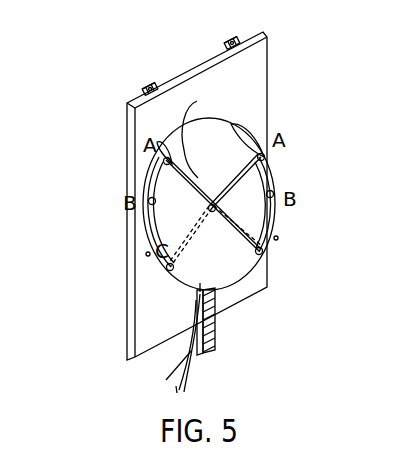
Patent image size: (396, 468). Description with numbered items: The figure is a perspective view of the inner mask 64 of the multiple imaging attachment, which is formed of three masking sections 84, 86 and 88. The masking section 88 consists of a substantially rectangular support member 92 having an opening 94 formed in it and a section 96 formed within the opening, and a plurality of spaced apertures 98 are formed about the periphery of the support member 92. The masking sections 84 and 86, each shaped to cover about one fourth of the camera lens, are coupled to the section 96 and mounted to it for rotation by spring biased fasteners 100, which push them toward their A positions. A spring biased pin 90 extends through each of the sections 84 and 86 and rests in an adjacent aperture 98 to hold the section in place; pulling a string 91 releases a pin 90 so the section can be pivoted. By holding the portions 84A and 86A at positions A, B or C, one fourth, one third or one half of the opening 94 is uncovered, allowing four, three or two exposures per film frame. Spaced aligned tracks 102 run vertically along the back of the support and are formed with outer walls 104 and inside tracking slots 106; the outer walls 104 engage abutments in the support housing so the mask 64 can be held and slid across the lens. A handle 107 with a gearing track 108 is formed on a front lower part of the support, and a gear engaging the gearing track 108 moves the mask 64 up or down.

The mask 64 is at (193, 196).
The masking section 84 is at (148, 228).
The portion of masking section 84 84A is at (186, 124).
The masking section 86 is at (267, 246).
The portion of masking section 86 86A is at (233, 183).
The masking section 88 is at (187, 196).
The spring biased pin 90 is at (188, 128).
The string 91 is at (149, 253).
The support member 92 is at (134, 143).
The opening 94 is at (267, 135).
The section 96 is at (197, 292).
The apertures 98 is at (149, 199).
The spring biased fasteners 100 is at (208, 208).
The tracks 102 is at (147, 86).
The outer walls 104 is at (144, 91).
The inside tracking slots 106 is at (226, 46).
The handle 107 is at (198, 357).
The gearing track 108 is at (216, 322).